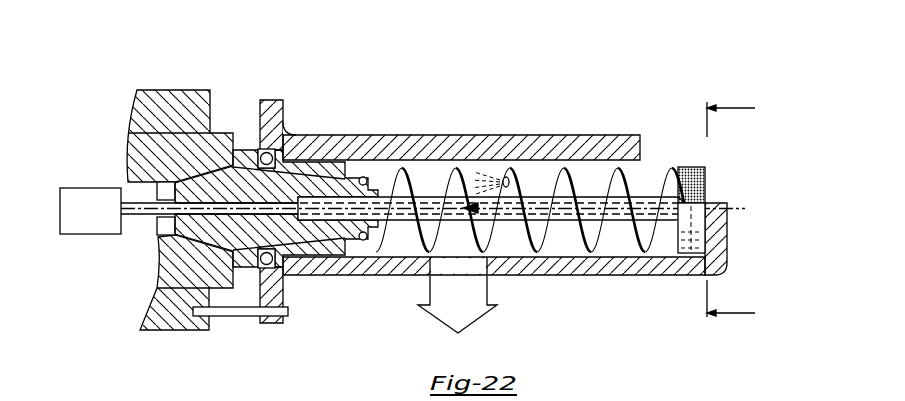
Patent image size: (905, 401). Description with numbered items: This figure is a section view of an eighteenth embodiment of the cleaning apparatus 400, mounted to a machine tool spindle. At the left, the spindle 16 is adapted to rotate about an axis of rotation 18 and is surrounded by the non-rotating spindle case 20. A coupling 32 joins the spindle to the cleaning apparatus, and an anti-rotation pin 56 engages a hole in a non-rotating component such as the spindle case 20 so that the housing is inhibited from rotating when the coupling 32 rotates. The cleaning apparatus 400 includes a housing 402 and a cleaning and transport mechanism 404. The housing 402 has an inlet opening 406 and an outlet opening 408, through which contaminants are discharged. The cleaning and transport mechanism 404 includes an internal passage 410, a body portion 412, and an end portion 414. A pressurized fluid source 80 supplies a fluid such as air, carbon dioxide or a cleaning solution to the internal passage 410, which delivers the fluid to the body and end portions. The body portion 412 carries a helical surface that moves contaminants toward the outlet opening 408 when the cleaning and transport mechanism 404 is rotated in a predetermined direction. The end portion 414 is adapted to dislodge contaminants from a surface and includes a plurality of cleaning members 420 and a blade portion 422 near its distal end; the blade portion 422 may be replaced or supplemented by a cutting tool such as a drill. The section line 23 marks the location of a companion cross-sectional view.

The spindle 16 is at (130, 142).
The axis of rotation 18 is at (137, 218).
The spindle case 20 is at (175, 322).
The section line 23- 23 is at (747, 213).
The coupling 32 is at (250, 148).
The anti-rotation pin 56 is at (236, 316).
The pressurized fluid source 80 is at (86, 188).
The cleaning apparatus 400 is at (446, 177).
The housing 402 is at (415, 135).
The cleaning and transport mechanism 404 is at (527, 246).
The inlet opening 406 is at (655, 148).
The outlet opening 408 is at (452, 263).
The internal passage 410 is at (535, 185).
The body portion 412 is at (615, 243).
The end portion 414 is at (683, 158).
The cleaning members 420 is at (708, 180).
The blade portion 422 is at (703, 232).